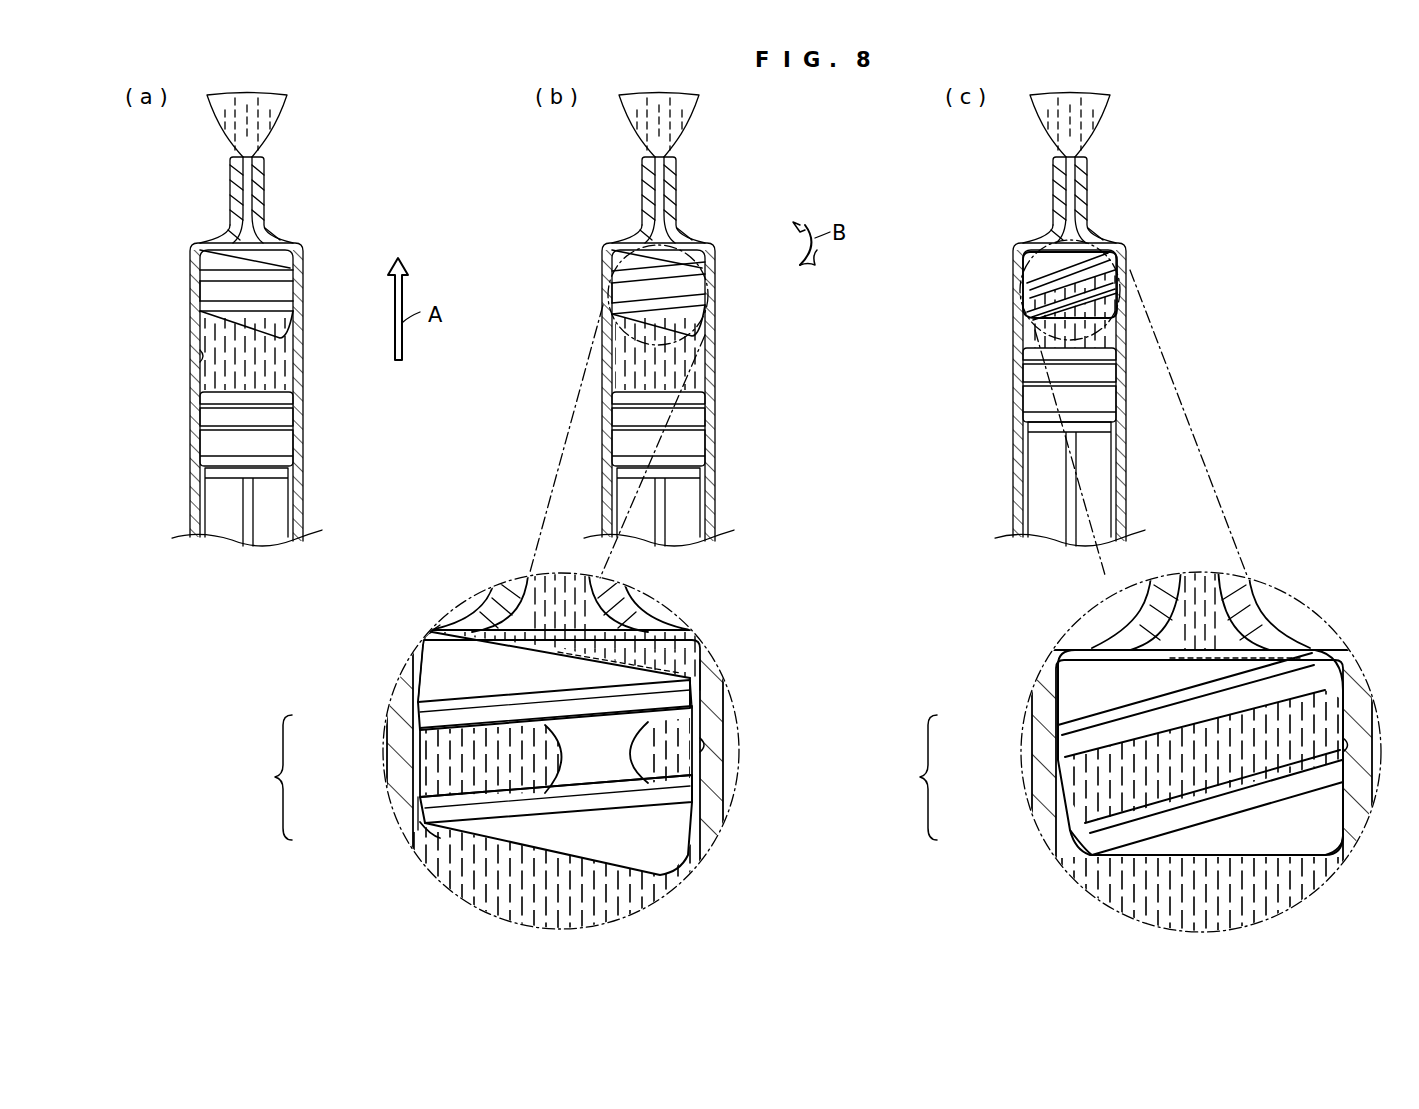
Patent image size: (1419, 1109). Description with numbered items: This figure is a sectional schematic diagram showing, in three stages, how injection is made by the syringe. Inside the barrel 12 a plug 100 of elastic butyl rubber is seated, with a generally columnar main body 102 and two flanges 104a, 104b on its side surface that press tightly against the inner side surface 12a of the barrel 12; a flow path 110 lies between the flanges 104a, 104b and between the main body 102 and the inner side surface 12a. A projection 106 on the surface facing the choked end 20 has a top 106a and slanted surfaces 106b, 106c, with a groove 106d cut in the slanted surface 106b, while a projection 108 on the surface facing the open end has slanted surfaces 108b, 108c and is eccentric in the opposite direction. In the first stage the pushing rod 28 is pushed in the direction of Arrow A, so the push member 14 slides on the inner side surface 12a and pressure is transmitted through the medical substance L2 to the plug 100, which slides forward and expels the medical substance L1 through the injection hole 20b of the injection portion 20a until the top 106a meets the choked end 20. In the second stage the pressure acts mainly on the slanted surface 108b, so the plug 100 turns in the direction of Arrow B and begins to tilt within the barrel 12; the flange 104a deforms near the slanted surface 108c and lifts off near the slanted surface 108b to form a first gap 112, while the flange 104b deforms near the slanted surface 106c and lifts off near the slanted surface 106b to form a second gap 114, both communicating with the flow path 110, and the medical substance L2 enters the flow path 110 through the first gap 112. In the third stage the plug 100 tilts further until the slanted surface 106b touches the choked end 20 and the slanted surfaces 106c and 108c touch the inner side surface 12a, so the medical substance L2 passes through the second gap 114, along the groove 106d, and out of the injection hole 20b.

The barrel 12 is at (312, 450).
The inner side surface 12a is at (203, 360).
The push member 14 is at (285, 414).
The choked end 20 is at (732, 403).
The injection portion 20a is at (267, 205).
The injection hole 20b is at (245, 192).
The pushing rod 28 is at (283, 503).
The plug 100 is at (763, 567).
The main body 102 is at (432, 762).
The flange 104a is at (436, 796).
The flange 104b is at (436, 724).
The projection 106 is at (210, 257).
The top 106a is at (445, 632).
The slanted surface 106b is at (500, 625).
The slanted surface 106c is at (428, 668).
The groove 106d is at (625, 632).
The projection 108 is at (283, 318).
The slanted surface 108b is at (520, 855).
The slanted surface 108c is at (690, 830).
The flow path 110 is at (206, 301).
The first gap 112 is at (425, 845).
The second gap 114 is at (708, 680).
The medical substance L1 is at (263, 112).
The medical substance L2 is at (283, 352).